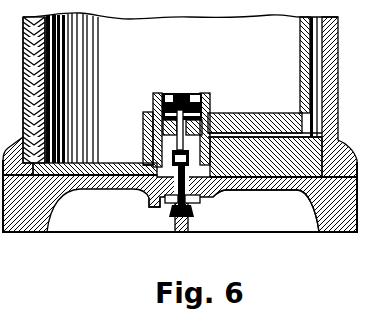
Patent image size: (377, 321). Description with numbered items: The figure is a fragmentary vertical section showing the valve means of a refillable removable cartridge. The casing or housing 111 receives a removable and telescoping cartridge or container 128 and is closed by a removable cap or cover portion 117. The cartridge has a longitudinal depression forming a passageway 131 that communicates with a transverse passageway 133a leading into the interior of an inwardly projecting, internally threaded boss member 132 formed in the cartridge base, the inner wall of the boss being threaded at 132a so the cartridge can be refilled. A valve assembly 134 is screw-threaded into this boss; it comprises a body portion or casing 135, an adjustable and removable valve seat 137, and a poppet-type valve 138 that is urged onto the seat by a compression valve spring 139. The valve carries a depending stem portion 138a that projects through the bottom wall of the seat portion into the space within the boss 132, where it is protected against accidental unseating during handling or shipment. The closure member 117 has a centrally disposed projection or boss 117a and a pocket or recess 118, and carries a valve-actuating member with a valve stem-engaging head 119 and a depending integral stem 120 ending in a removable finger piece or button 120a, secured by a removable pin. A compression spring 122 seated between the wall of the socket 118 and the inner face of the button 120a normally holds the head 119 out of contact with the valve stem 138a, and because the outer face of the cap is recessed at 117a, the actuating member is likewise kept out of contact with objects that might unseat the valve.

The casing or housing 111 is at (338, 63).
The removable cap or cover portion 117 is at (27, 212).
The centrally disposed projection or boss 117a is at (222, 198).
The pocket or recess 118 is at (148, 199).
The valve stem-engaging head or portion 119 is at (192, 153).
The depending integral stem 120 is at (182, 208).
The removable finger piece or button 120a is at (168, 200).
The compression spring 122 is at (193, 204).
The removable and telescoping cartridge or container 128 is at (134, 71).
The longitudinal passageway 131 is at (314, 38).
The internally threaded boss member 132 is at (143, 113).
The threaded inner wall of boss 132a is at (143, 155).
The transverse passageway 133a is at (268, 135).
The valve assembly 134 is at (209, 94).
The body portion or casing 135 is at (210, 106).
The valve seat 137 is at (143, 124).
The poppet-type valve 138 is at (188, 104).
The depending stem portion 138a is at (178, 147).
The compression valve spring 139 is at (172, 96).